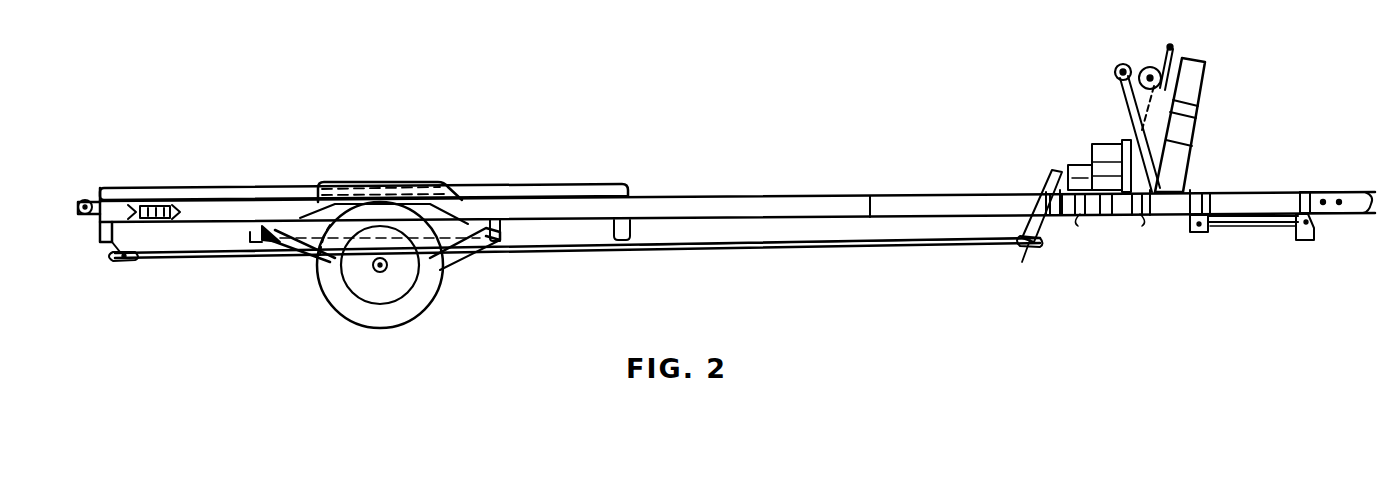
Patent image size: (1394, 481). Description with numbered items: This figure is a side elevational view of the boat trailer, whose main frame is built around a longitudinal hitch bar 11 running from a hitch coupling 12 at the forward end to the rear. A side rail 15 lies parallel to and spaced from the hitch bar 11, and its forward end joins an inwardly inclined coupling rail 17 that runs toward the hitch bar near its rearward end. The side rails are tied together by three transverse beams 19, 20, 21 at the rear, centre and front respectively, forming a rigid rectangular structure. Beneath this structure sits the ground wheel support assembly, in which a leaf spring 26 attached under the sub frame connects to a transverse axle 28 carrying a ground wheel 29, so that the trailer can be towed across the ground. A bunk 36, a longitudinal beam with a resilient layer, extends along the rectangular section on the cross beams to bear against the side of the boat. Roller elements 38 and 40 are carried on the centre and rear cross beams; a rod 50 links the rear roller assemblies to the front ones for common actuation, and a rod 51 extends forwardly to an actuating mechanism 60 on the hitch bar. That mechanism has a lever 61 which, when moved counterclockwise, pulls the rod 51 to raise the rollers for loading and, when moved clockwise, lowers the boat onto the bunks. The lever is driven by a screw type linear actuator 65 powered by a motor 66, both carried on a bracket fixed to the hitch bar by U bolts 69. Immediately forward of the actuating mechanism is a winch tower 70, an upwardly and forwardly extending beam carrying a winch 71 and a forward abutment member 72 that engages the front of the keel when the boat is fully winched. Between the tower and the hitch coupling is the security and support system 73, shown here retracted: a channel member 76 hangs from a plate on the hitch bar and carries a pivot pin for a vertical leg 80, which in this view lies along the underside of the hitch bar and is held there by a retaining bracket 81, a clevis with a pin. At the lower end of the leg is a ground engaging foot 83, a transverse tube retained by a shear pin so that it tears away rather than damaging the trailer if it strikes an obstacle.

The hitch bar 11 is at (910, 200).
The hitch coupling 12 is at (1360, 198).
The side rail 15 is at (560, 212).
The coupling rail 17 is at (752, 206).
The transverse beam 19 is at (98, 240).
The transverse beam 20 is at (330, 273).
The transverse beam 21 is at (640, 230).
The leaf spring 26 is at (312, 265).
The transverse axle 28 is at (384, 272).
The ground wheel 29 is at (432, 290).
The bunk 36 is at (258, 190).
The roller element 38 is at (500, 195).
The roller element 40 is at (156, 200).
The rod 50 is at (162, 266).
The rod 51 is at (794, 242).
The actuating mechanism 60 is at (1068, 137).
The lever 61 is at (1028, 248).
The linear actuator 65 is at (1072, 172).
The motor 66 is at (1110, 145).
The U bolts 69 is at (1128, 218).
The winch tower 70 is at (1196, 128).
The winch 71 is at (1150, 56).
The forward abutment member 72 is at (1116, 66).
The security and support system 73 is at (1238, 241).
The channel member 76 is at (1316, 232).
The vertical leg 80 is at (1266, 224).
The retaining bracket 81 is at (1222, 205).
The ground engaging foot 83 is at (1188, 232).